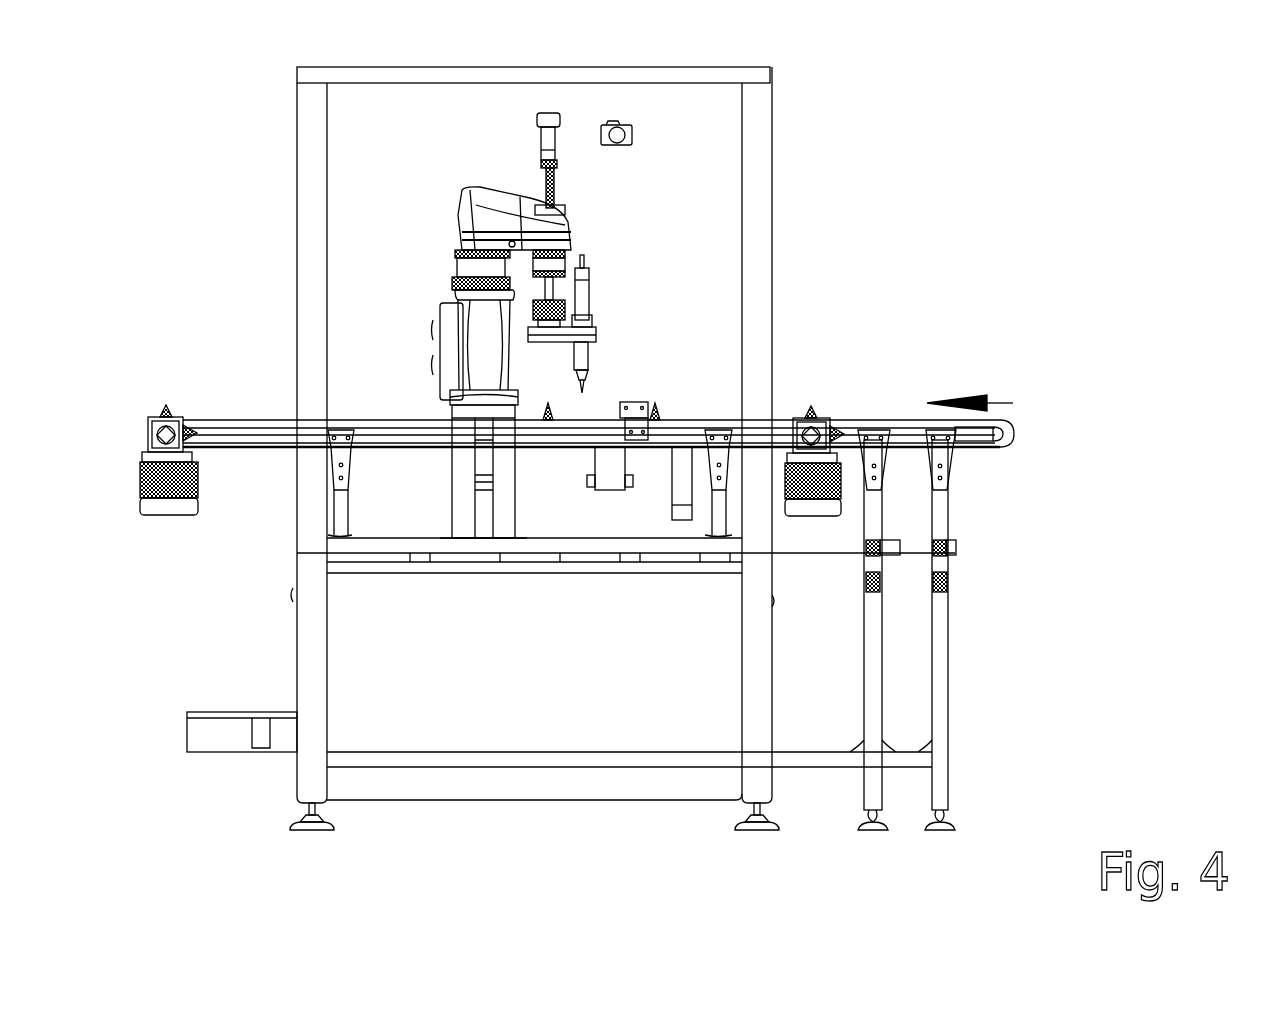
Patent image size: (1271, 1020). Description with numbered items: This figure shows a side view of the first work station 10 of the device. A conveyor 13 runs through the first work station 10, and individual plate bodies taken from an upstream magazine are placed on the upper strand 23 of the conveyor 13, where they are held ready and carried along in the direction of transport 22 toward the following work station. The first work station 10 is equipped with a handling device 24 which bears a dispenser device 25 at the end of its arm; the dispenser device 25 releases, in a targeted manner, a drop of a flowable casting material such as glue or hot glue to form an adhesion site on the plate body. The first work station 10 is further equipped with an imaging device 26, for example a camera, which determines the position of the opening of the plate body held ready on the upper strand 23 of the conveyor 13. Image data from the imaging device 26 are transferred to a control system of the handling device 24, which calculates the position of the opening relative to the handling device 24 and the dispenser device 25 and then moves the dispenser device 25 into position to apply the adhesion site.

The first work station 10 is at (838, 158).
The conveyor 13 is at (245, 418).
The direction of transport 22 is at (1000, 402).
The upper strand 23 is at (372, 418).
The handling device 24 is at (500, 210).
The dispenser device 25 is at (600, 375).
The imaging device 26 is at (620, 135).